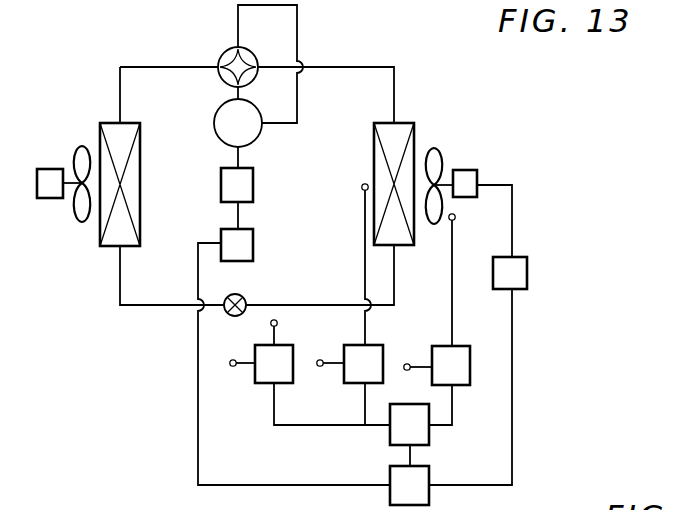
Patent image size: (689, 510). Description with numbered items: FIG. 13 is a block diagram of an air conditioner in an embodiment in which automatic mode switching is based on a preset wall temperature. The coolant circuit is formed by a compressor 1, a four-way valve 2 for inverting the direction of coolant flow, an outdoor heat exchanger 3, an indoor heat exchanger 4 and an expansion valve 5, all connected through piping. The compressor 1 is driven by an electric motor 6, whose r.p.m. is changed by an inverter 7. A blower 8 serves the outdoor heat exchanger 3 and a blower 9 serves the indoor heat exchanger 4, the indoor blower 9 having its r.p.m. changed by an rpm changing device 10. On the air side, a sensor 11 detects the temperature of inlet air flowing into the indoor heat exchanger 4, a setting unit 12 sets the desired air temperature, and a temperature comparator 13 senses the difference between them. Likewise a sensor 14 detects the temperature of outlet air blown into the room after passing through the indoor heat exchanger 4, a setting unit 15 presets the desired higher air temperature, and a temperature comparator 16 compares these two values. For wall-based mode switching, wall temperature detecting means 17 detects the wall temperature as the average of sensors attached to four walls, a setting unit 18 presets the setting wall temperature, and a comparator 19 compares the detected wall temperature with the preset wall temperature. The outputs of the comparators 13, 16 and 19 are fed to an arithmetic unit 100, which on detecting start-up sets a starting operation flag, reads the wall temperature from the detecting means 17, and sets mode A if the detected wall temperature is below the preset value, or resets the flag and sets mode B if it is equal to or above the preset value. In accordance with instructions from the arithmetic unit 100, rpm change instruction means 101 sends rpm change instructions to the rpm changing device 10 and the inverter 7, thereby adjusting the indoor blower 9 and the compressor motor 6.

The compressor 1 is at (218, 110).
The four-way valve 2 is at (224, 52).
The outdoor heat exchanger 3 is at (108, 123).
The indoor heat exchanger 4 is at (402, 123).
The expansion valve 5 is at (242, 297).
The electric motor 6 is at (253, 180).
The inverter 7 is at (253, 242).
The blower for the outdoor heat exchanger 8 is at (50, 169).
The blower for the indoor heat exchanger 9 is at (465, 170).
The rpm changing device 10 is at (527, 262).
The inlet air temperature sensor 11 is at (364, 184).
The setting unit 12 is at (320, 360).
The temperature comparator 13 is at (378, 345).
The outlet air temperature sensor 14 is at (455, 216).
The setting unit 15 is at (408, 364).
The temperature comparator 16 is at (470, 355).
The wall temperature detecting means 17 is at (276, 328).
The wall temperature setting unit 18 is at (233, 360).
The comparator 19 is at (262, 385).
The arithmetic unit 100 is at (429, 430).
The rpm change instruction means 101 is at (390, 472).